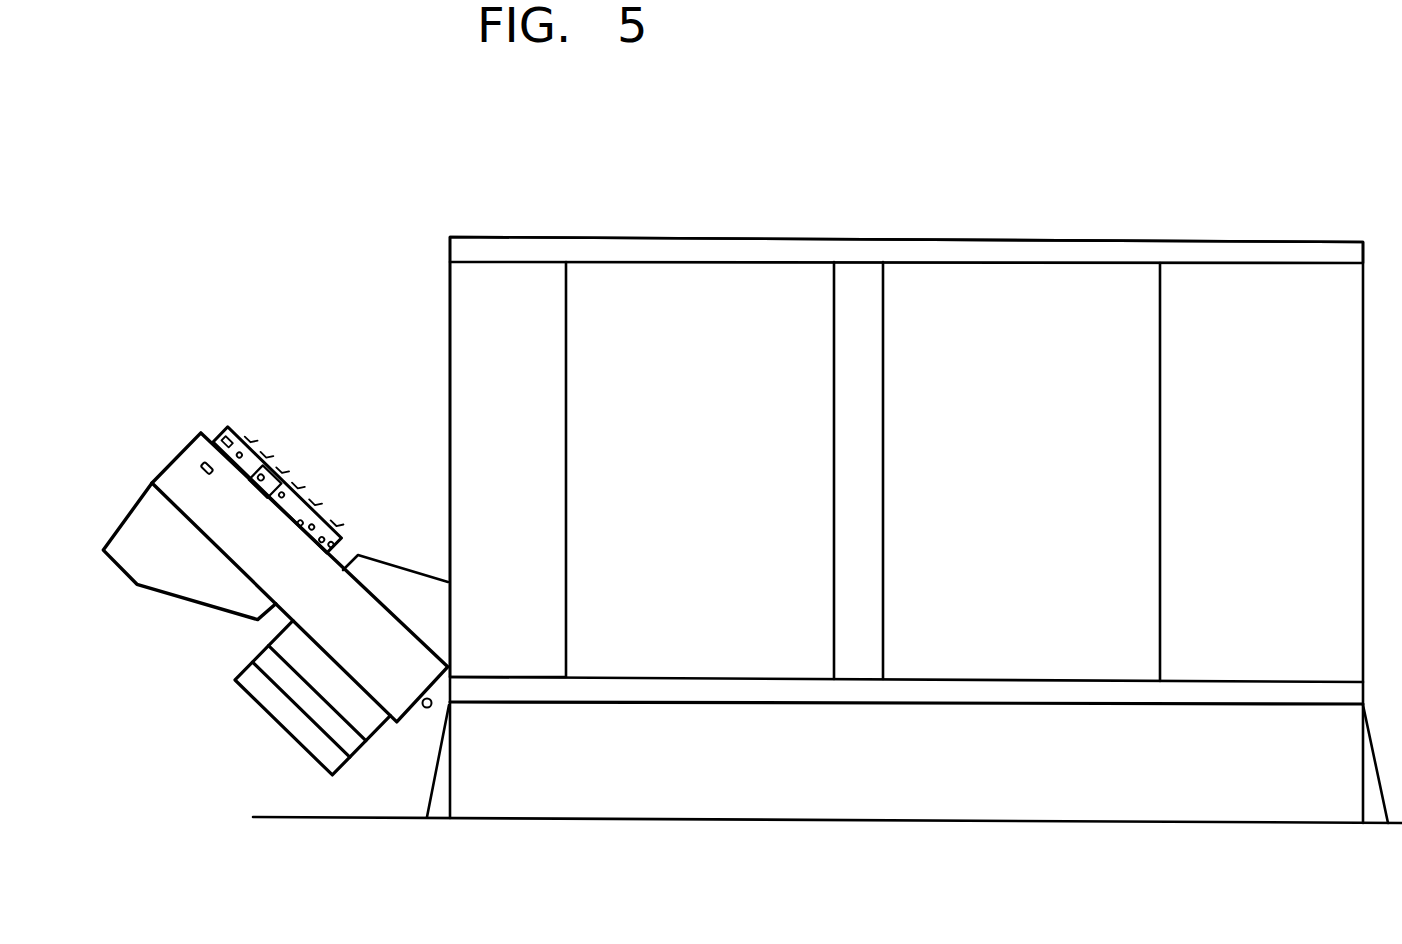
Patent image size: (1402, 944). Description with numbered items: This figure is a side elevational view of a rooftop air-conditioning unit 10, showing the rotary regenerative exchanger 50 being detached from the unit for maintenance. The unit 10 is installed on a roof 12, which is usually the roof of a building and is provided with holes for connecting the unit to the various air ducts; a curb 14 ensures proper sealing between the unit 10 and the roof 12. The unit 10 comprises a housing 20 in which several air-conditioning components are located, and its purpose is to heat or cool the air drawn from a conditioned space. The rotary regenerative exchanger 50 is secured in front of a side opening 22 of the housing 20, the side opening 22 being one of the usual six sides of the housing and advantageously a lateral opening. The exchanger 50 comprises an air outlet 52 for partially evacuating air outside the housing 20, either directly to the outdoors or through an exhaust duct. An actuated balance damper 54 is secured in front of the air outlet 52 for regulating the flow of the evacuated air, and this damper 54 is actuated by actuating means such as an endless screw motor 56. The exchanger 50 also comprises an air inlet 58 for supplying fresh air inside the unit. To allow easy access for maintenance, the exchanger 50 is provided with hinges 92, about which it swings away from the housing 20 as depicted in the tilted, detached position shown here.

The rooftop air-conditioning unit 10 is at (486, 208).
The roof 12 is at (560, 815).
The curb 14 is at (438, 808).
The housing 20 is at (1050, 240).
The side opening 22 is at (428, 389).
The rotary regenerative exchanger 50 is at (182, 418).
The air outlet 52 is at (125, 578).
The actuated balance damper 54 is at (333, 523).
The endless screw motor 56 is at (282, 482).
The air inlet 58 is at (283, 737).
The hinges 92 is at (428, 708).